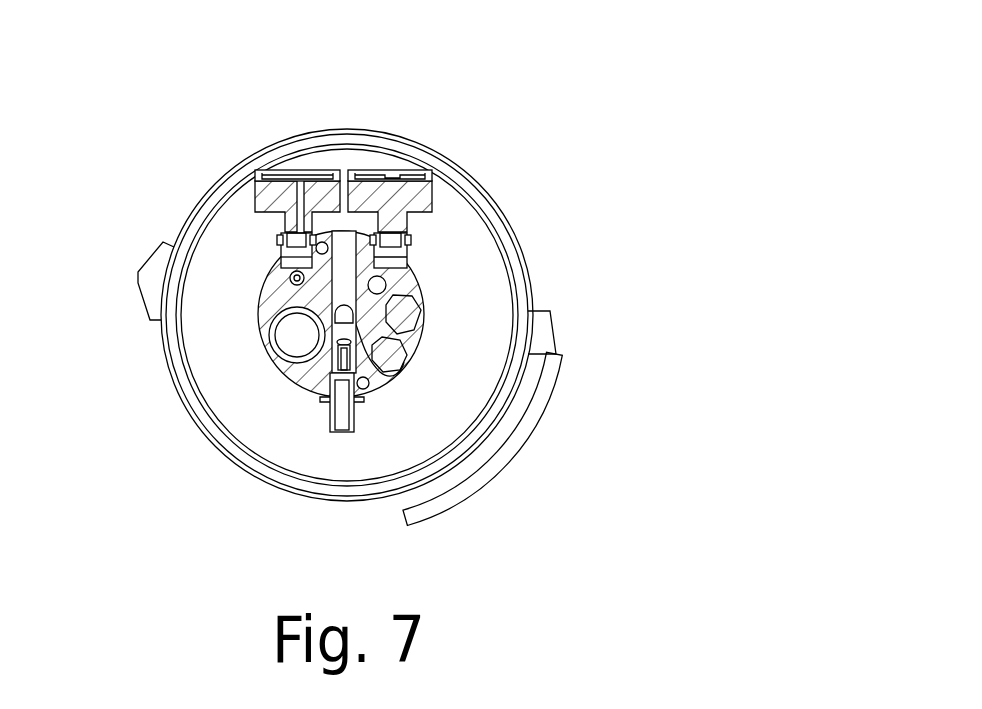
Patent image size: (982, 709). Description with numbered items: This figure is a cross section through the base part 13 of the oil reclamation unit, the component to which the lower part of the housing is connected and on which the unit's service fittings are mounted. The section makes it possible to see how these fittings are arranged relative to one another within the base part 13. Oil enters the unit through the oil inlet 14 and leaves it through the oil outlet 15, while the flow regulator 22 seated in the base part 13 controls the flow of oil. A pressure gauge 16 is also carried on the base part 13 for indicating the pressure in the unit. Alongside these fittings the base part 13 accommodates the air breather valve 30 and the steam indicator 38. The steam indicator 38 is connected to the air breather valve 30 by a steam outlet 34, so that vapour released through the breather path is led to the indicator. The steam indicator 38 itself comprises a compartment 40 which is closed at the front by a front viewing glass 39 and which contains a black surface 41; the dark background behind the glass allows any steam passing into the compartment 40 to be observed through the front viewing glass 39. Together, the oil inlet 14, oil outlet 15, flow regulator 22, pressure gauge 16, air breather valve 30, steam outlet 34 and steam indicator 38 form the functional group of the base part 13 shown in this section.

The steam indicator 38 is at (238, 165).
The compartment 40 is at (270, 177).
The front viewing glass 39 is at (312, 173).
The black surface 41 is at (262, 199).
The steam outlet 34 is at (298, 271).
The air breather valve 30 is at (275, 298).
The pressure gauge 16 is at (430, 205).
The base part 13 is at (382, 385).
The flow regulator 22 is at (337, 337).
The oil outlet 15 is at (290, 347).
The oil inlet 14 is at (342, 430).